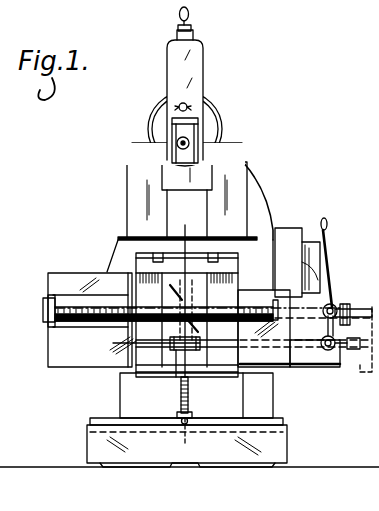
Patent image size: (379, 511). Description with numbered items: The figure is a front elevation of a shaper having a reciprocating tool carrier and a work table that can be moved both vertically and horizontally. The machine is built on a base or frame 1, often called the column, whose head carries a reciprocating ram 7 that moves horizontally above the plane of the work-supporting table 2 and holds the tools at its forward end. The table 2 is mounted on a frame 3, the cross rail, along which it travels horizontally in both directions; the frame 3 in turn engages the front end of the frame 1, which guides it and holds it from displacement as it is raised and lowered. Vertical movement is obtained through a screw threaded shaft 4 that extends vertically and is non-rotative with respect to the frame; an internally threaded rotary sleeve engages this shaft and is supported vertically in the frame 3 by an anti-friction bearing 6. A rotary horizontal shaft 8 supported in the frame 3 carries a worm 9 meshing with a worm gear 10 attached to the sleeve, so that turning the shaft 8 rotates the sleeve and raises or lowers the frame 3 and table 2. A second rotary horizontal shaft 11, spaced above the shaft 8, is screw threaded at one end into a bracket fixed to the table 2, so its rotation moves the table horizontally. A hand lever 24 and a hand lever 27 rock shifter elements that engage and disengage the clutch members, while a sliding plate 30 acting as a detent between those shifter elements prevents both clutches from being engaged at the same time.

The base or frame 1 is at (253, 187).
The work-supporting table 2 is at (223, 257).
The frame 3 is at (83, 283).
The screw threaded shaft 4 is at (190, 402).
The anti-friction bearing 6 is at (180, 237).
The reciprocating ram 7 is at (221, 90).
The rotary horizontal shaft 8 is at (331, 275).
The worm 9 is at (172, 370).
The worm gear 10 is at (202, 370).
The rotary horizontal shaft 11 is at (257, 305).
The hand lever 24 is at (323, 335).
The hand lever 27 is at (335, 302).
The sliding plate 30 is at (325, 310).